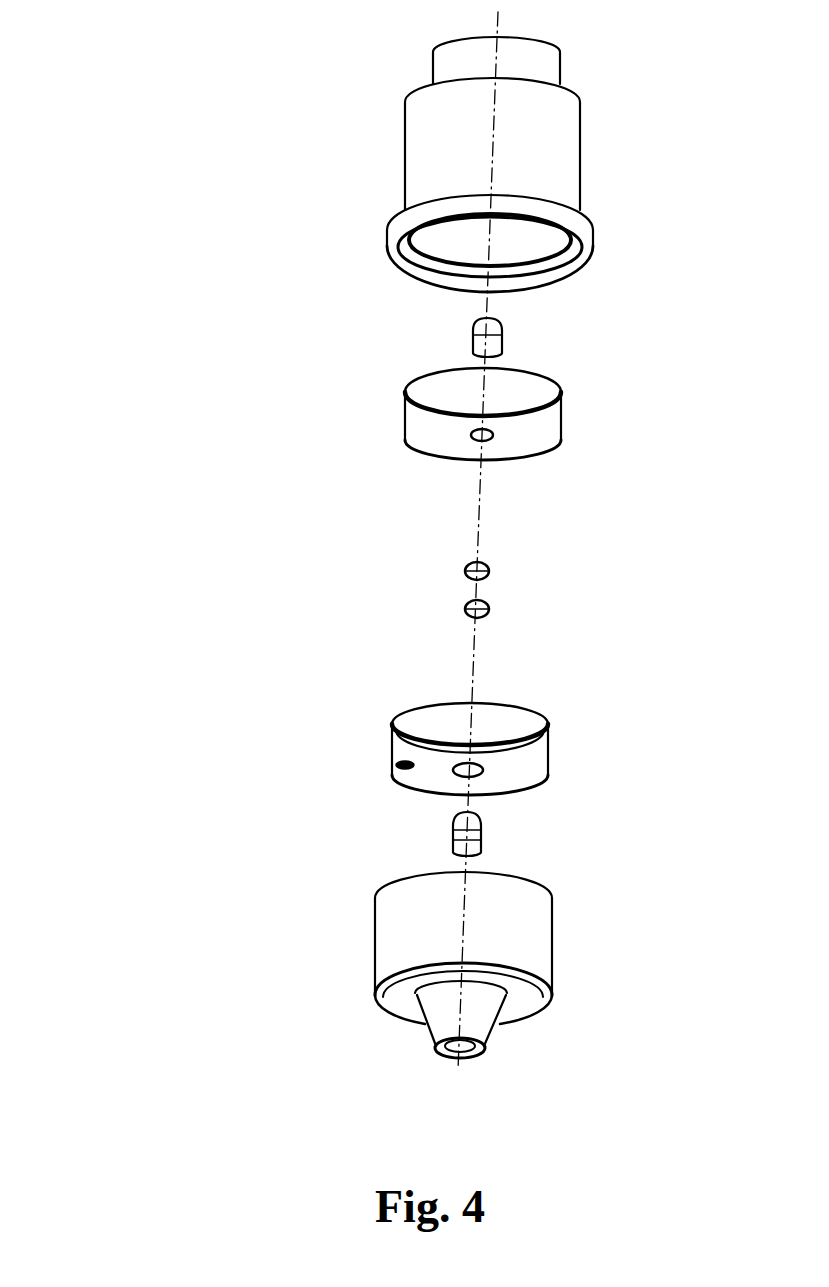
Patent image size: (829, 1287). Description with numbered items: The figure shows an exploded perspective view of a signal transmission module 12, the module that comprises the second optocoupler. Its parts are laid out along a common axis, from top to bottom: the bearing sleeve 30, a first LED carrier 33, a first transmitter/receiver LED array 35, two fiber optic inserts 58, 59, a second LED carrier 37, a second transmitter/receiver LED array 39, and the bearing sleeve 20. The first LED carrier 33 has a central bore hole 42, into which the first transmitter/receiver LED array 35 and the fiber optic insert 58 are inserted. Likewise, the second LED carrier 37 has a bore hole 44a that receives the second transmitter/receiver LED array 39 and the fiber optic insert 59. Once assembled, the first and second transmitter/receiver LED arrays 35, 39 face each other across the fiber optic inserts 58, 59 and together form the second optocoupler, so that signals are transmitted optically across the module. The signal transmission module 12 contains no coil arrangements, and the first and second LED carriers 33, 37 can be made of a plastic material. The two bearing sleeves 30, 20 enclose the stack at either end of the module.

The signal transmission module 12 is at (274, 14).
The bearing sleeve 20 is at (515, 943).
The bearing sleeve 30 is at (553, 150).
The first LED carrier 33 is at (552, 412).
The first transmitter/receiver LED array 35 is at (502, 333).
The second LED carrier 37 is at (513, 735).
The second transmitter/receiver LED array 39 is at (481, 823).
The central bore hole 42 is at (482, 441).
The bore hole 44a is at (478, 773).
The fiber optic insert 58 is at (489, 570).
The fiber optic insert 59 is at (489, 607).